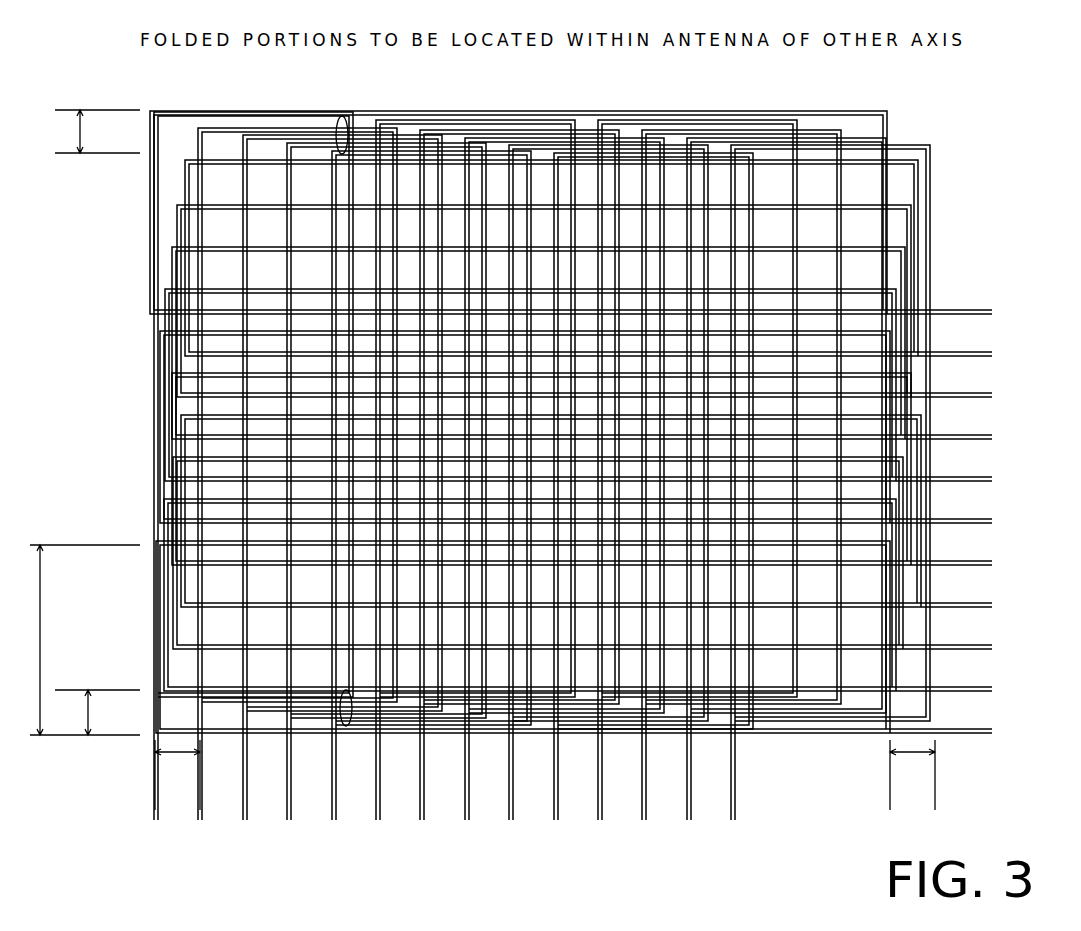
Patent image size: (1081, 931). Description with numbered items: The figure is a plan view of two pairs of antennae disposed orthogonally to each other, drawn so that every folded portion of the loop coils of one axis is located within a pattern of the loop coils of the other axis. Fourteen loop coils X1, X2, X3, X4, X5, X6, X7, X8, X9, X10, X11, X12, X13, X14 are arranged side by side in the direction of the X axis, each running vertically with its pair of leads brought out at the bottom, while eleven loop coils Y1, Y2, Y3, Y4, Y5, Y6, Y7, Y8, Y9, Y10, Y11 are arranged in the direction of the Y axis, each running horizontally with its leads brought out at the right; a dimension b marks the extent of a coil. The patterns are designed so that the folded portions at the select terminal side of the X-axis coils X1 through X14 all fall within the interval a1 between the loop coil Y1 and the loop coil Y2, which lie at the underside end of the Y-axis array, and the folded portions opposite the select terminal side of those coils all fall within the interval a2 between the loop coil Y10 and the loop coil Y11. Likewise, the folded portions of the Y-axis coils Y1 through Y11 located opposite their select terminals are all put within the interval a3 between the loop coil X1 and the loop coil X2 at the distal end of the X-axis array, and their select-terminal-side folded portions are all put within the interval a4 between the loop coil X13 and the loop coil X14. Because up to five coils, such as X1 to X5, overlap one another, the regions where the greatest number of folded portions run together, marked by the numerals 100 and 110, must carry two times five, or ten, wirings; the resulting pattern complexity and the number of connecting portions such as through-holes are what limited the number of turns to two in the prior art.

The portion with greatest number of folded portions 100 is at (344, 116).
The portion with greatest number of folded portions 110 is at (345, 727).
The interval between loop coil Y1 and loop coil Y2 a1 is at (88, 713).
The interval between loop coil Y10 and loop coil Y11 a2 is at (80, 132).
The interval between loop coil X1 and loop coil X2 a3 is at (172, 753).
The interval between loop coil X13 and loop coil X14 a4 is at (910, 753).
The loop coil width b is at (42, 607).
The loop coil X1 is at (251, 480).
The loop coil X2 is at (293, 488).
The loop coil X3 is at (338, 492).
The loop coil X4 is at (382, 496).
The loop coil X5 is at (427, 500).
The loop coil X6 is at (471, 484).
The loop coil X7 is at (515, 489).
The loop coil X8 is at (559, 493).
The loop coil X9 is at (603, 497).
The loop coil X10 is at (646, 501).
The loop coil X11 is at (695, 484).
The loop coil X12 is at (739, 489).
The loop coil X13 is at (783, 493).
The loop coil X14 is at (827, 497).
The loop coil Y1 is at (594, 642).
The loop coil Y2 is at (598, 600).
The loop coil Y3 is at (602, 558).
The loop coil Y4 is at (606, 516).
The loop coil Y5 is at (602, 474).
The loop coil Y6 is at (596, 432).
The loop coil Y7 is at (598, 390).
The loop coil Y8 is at (602, 348).
The loop coil Y9 is at (604, 306).
The loop coil Y10 is at (613, 263).
The loop coil Y11 is at (596, 218).